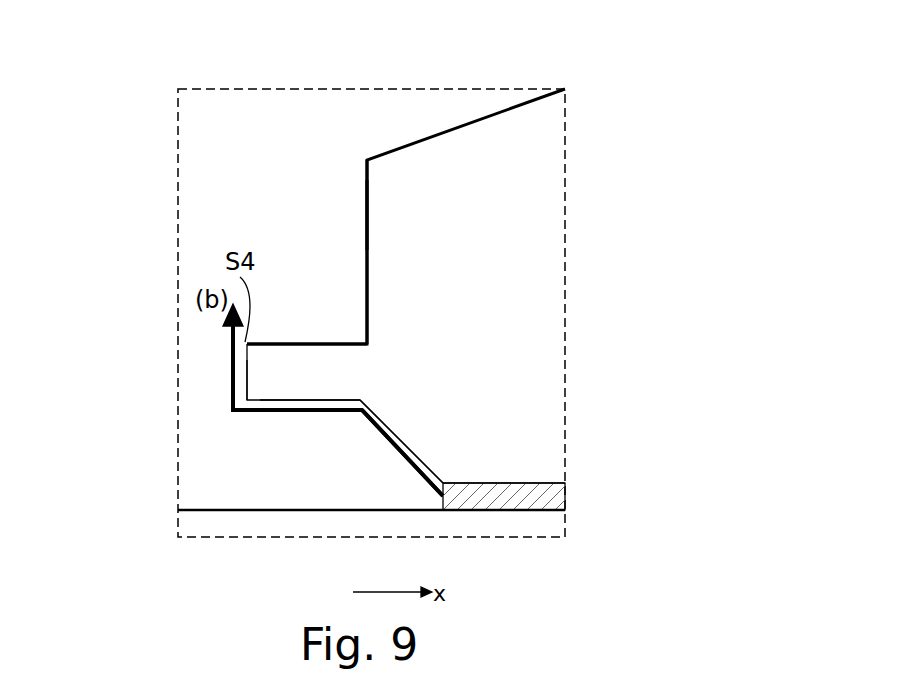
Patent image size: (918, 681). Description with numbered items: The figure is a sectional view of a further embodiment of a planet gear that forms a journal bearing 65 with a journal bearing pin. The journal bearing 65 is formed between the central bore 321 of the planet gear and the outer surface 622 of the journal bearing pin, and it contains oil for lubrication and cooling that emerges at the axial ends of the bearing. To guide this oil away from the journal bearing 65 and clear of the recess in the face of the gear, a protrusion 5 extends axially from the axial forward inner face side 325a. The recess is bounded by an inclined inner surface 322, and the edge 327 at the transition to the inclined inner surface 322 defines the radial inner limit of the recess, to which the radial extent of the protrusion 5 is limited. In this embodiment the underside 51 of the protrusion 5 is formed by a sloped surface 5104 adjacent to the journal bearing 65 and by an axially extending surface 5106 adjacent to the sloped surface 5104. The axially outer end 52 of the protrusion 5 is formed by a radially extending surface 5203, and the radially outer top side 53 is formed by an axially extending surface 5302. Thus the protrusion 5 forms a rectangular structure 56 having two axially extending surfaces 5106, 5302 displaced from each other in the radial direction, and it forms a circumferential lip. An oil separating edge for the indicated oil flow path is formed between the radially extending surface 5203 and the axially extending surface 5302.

The protrusion 5 is at (297, 355).
The underside of the protrusion 51 is at (393, 437).
The axially outer end of the protrusion 52 is at (244, 352).
The radially outer top side of the protrusion 53 is at (268, 344).
The rectangular structure 56 is at (262, 384).
The journal bearing 65 is at (553, 495).
The central bore 321 is at (508, 483).
The inclined inner surface 322 is at (520, 103).
The axial forward inner face side 325a is at (367, 195).
The edge 327 is at (367, 160).
The outer surface of the journal bearing pin 622 is at (258, 510).
The sloped surface 5104 is at (420, 463).
The axially extending surface 5106 is at (320, 403).
The radially extending surface 5203 is at (245, 386).
The axially extending surface 5302 is at (318, 344).